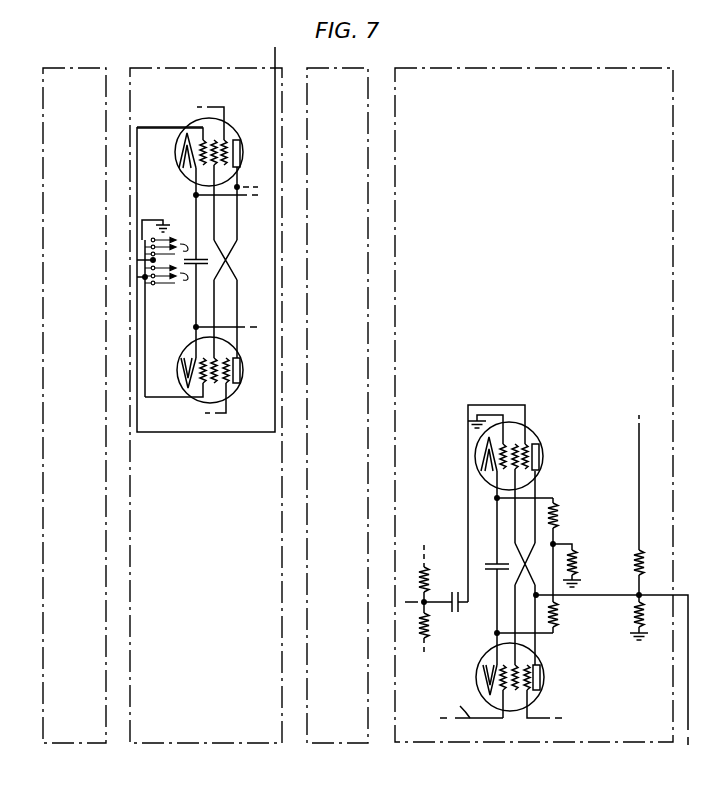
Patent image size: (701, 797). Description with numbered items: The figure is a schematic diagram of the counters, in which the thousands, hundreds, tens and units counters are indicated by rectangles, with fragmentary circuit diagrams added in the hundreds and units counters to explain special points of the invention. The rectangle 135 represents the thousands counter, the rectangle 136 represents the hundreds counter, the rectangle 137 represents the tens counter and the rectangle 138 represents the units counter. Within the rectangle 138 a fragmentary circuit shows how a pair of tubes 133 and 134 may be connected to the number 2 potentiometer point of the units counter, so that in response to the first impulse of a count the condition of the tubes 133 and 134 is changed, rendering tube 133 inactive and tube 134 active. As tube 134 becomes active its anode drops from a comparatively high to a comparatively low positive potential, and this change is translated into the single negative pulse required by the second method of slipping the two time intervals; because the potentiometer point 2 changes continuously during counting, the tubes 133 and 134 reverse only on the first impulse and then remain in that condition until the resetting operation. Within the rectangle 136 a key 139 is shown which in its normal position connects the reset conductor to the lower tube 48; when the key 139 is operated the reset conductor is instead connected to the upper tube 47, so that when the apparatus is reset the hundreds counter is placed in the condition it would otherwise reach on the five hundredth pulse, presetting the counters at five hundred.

The rectangle representing the thousands counter 135 is at (50, 69).
The rectangle representing the hundreds counter 136 is at (189, 69).
The rectangle representing the tens counter 137 is at (322, 69).
The rectangle representing the units counter 138 is at (514, 69).
The upper tube 47 is at (232, 128).
The lower tube 48 is at (236, 396).
The key 139 is at (181, 249).
The tube 133 is at (544, 452).
The tube 134 is at (544, 682).
The number 2 potentiometer point 2 is at (428, 600).